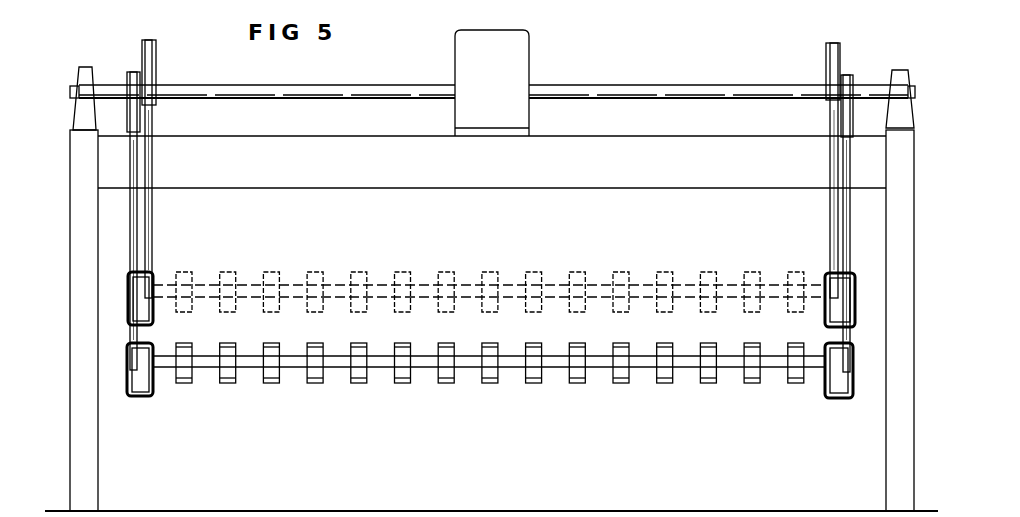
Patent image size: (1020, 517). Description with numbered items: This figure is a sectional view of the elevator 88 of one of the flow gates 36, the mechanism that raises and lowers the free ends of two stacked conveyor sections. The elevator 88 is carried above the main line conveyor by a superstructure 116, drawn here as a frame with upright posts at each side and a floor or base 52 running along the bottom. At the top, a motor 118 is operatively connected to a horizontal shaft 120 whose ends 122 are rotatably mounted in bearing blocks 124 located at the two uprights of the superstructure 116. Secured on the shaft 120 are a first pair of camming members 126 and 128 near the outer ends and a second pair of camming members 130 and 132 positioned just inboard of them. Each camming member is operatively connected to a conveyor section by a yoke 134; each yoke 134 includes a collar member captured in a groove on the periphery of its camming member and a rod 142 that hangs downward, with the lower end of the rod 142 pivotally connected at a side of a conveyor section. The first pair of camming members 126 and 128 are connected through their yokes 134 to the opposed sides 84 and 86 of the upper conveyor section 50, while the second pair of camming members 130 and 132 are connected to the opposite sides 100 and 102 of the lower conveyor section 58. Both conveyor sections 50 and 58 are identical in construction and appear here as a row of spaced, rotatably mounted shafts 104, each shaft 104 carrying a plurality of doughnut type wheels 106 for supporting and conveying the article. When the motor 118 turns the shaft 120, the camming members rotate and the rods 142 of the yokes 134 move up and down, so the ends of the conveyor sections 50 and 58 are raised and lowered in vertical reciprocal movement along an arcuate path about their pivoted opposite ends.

The flow gate 36 is at (738, 47).
The conveyor section 50 is at (504, 238).
The floor / base 52 is at (598, 510).
The conveyor section 58 is at (674, 394).
The side 84 is at (128, 303).
The side 86 is at (855, 305).
The elevator 88 is at (546, 25).
The side 100 is at (128, 380).
The side 102 is at (854, 385).
The shaft 104 is at (380, 283).
The doughnut type wheel 106 is at (490, 320).
The superstructure 116 is at (921, 211).
The motor 118 is at (485, 40).
The shaft 120 is at (410, 90).
The end 122 is at (70, 92).
The bearing block 124 is at (80, 116).
The camming member 126 is at (158, 67).
The camming member 128 is at (826, 70).
The camming member 130 is at (130, 76).
The camming member 132 is at (872, 73).
The yoke 134 is at (128, 207).
The rod 142 is at (130, 240).